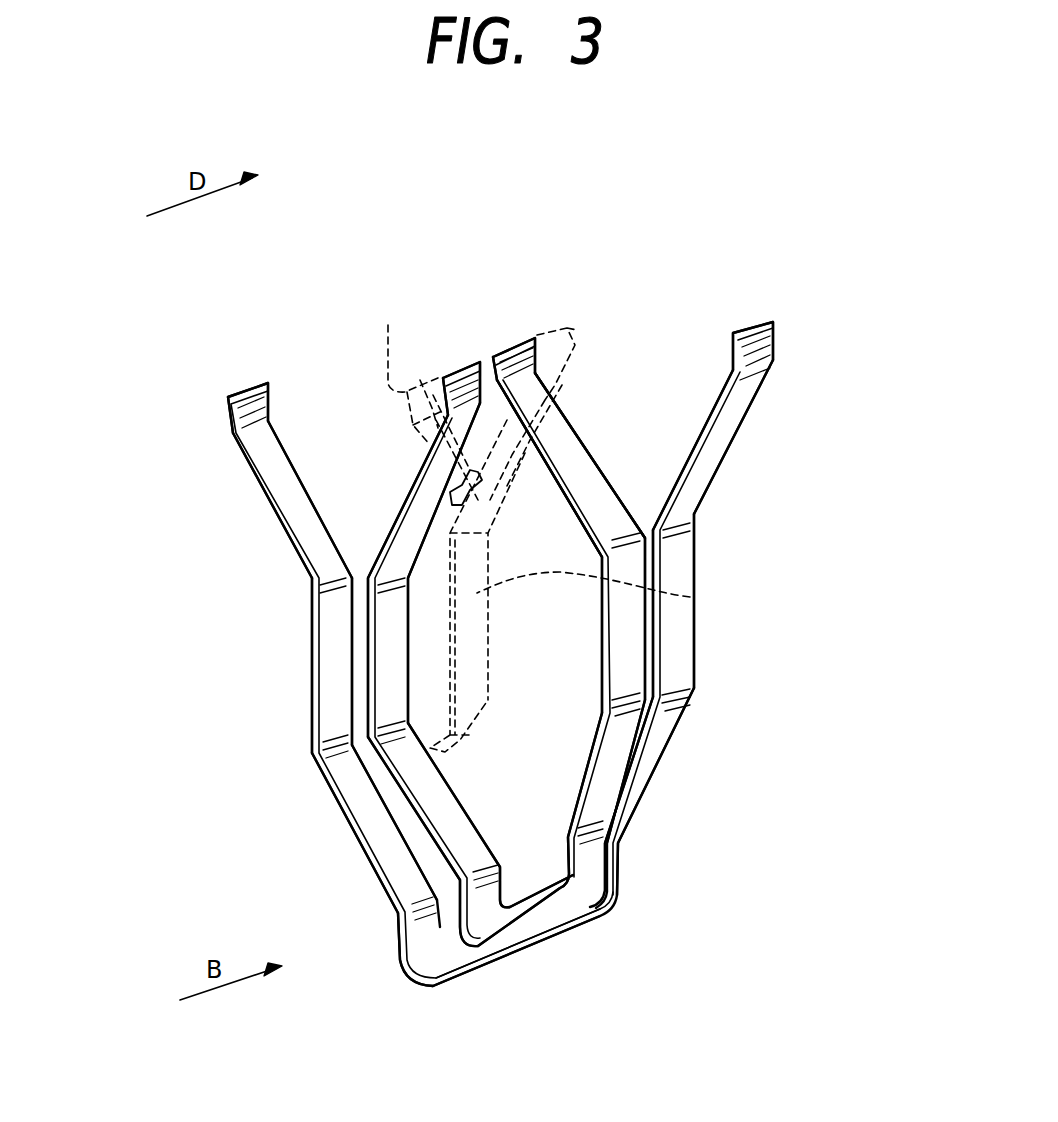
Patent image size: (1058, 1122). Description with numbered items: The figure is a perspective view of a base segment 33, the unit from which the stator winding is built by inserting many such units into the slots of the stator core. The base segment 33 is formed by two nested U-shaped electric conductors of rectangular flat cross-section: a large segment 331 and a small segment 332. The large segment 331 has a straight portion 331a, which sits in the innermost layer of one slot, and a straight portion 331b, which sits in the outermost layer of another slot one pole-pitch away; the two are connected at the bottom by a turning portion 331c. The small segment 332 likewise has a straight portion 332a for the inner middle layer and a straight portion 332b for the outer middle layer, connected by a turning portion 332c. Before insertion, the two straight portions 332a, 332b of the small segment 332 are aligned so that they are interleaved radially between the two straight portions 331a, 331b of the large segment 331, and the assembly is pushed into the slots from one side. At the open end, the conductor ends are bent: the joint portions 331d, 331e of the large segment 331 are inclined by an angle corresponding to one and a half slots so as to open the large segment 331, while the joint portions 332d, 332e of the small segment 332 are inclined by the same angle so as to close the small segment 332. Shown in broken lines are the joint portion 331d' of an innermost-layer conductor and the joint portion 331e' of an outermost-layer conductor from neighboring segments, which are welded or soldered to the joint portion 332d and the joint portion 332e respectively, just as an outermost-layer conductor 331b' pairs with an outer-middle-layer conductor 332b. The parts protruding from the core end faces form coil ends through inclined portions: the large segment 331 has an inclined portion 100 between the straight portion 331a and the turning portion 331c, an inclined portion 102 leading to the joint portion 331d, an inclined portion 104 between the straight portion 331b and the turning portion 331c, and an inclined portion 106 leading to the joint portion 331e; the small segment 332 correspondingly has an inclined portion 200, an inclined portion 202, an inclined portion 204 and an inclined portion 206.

The base segment 33 is at (390, 938).
The inclined portion 100 is at (360, 828).
The inclined portion 102 is at (285, 487).
The inclined portion 104 is at (640, 768).
The inclined portion 106 is at (732, 418).
The inclined portion 200 is at (437, 800).
The inclined portion 202 is at (395, 527).
The inclined portion 204 is at (590, 752).
The inclined portion 206 is at (583, 455).
The large segment 331 is at (745, 468).
The straight portion 331a is at (330, 622).
The straight portion 331b is at (756, 605).
The electrical conductor 331b' is at (639, 586).
The turning portion 331c is at (465, 960).
The joint portion 331d is at (182, 430).
The joint portion 331d' is at (378, 390).
The joint portion 331e is at (821, 325).
The joint portion 331e' is at (557, 369).
The small segment 332 is at (605, 478).
The straight portion 332a is at (388, 672).
The straight portion 332b is at (627, 683).
The turning portion 332c is at (553, 905).
The joint portion 332d is at (468, 370).
The joint portion 332e is at (522, 345).